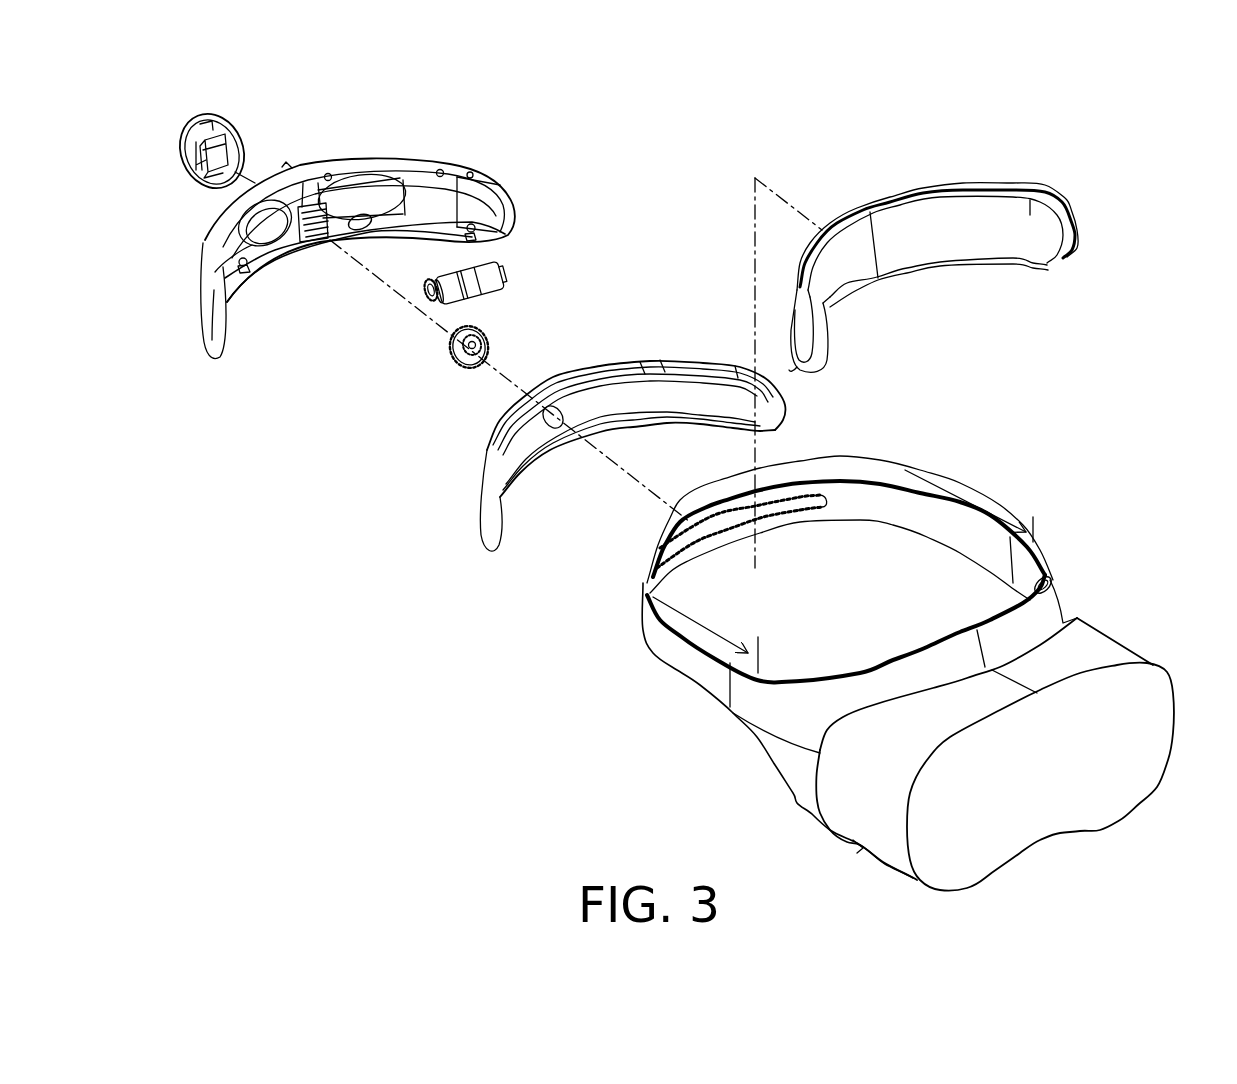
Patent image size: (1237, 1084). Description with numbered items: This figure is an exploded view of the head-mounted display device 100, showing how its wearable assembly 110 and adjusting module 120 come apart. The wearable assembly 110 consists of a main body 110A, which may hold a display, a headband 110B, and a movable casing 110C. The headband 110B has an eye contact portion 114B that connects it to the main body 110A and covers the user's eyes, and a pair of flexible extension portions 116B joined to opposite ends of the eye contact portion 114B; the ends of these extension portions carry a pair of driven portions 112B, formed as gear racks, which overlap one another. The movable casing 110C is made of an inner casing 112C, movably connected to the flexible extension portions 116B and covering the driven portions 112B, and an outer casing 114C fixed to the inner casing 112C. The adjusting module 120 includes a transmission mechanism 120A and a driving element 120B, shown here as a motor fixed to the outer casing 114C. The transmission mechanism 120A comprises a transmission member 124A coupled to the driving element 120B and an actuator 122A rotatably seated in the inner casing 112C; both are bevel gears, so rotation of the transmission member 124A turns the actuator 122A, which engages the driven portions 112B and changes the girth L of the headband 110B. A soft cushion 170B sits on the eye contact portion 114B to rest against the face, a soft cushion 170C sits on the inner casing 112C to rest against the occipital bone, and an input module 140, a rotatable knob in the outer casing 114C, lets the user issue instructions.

The head-mounted display device 100 is at (1143, 146).
The wearable assembly 110 is at (241, 490).
The main body 110A is at (853, 787).
The headband 110B is at (634, 613).
The movable casing 110C is at (320, 463).
The driven portions 112B is at (800, 490).
The inner casing 112C is at (482, 518).
The eye contact portion 114B is at (1040, 612).
The outer casing 114C is at (430, 165).
The flexible extension portions 116B is at (952, 527).
The adjusting module 120 is at (652, 237).
The transmission mechanism 120A is at (575, 283).
The driving element 120B is at (487, 265).
The actuator 122A is at (488, 327).
The transmission member 124A is at (463, 308).
The input module 140 is at (240, 109).
The soft cushion 170B is at (1043, 580).
The soft cushion 170C is at (1005, 247).
The girth L is at (905, 460).